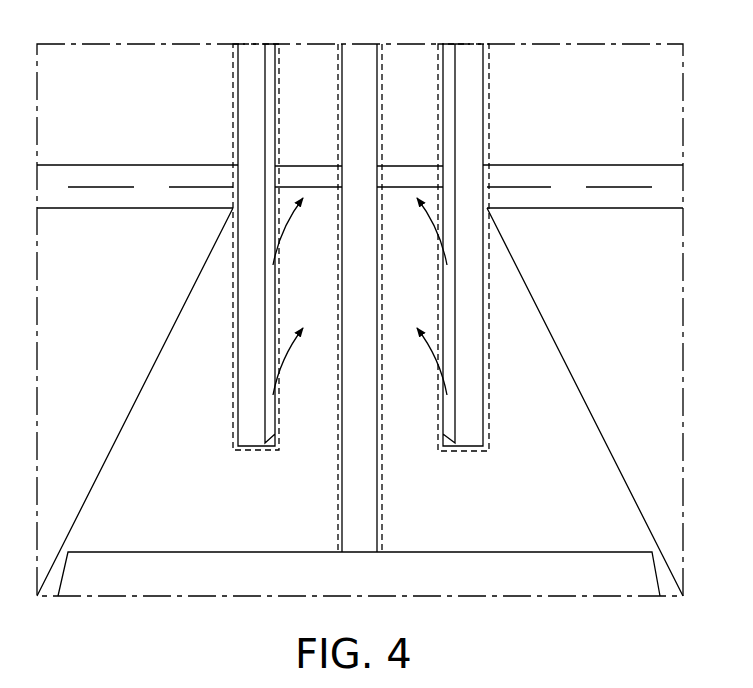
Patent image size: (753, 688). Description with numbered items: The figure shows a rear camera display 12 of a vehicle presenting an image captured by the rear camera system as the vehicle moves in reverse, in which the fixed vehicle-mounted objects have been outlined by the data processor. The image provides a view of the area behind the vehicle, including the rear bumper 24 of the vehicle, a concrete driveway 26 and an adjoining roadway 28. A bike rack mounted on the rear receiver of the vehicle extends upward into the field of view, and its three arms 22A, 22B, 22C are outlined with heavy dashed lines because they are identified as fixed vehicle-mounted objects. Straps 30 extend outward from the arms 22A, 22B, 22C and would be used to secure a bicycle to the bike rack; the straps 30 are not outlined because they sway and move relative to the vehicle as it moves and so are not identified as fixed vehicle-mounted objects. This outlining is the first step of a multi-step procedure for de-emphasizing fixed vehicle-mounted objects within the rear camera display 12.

The rear camera display 12 is at (160, 44).
The arm of the bike rack 22A is at (250, 97).
The arm of the bike rack 22B is at (363, 128).
The arm of the bike rack 22C is at (468, 128).
The rear bumper 24 is at (110, 588).
The concrete driveway 26 is at (153, 513).
The adjoining roadway 28 is at (185, 195).
The straps 30 is at (283, 250).